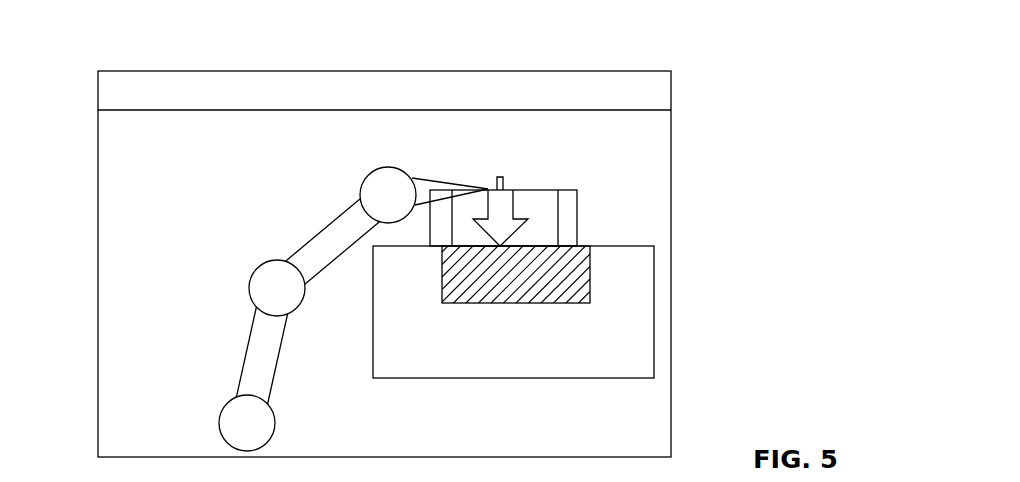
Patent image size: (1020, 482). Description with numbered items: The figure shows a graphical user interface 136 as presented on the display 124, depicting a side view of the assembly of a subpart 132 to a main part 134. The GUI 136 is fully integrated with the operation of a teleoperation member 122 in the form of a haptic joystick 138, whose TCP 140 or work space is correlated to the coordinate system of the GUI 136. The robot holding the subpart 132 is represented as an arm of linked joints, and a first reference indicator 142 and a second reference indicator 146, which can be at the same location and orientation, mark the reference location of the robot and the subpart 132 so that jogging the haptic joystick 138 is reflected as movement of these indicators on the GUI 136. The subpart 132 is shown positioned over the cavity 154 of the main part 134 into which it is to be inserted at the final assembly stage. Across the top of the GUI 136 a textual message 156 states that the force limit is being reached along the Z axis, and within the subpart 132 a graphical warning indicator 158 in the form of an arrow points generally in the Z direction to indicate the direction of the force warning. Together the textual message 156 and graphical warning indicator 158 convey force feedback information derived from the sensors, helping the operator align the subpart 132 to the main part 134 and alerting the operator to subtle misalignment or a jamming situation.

The display 124 is at (344, 246).
The textual message 156 is at (532, 71).
The graphical user interface 136 is at (127, 433).
The teleoperation member 122 is at (353, 309).
The haptic joystick 138 is at (272, 390).
The main part 134 is at (630, 315).
The cavity 154 is at (575, 273).
The subpart 132 is at (567, 228).
The graphical warning indicator 158 is at (515, 205).
The TCP 140 is at (677, 151).
The first reference indicator 142 is at (677, 151).
The second reference indicator 146 is at (503, 187).